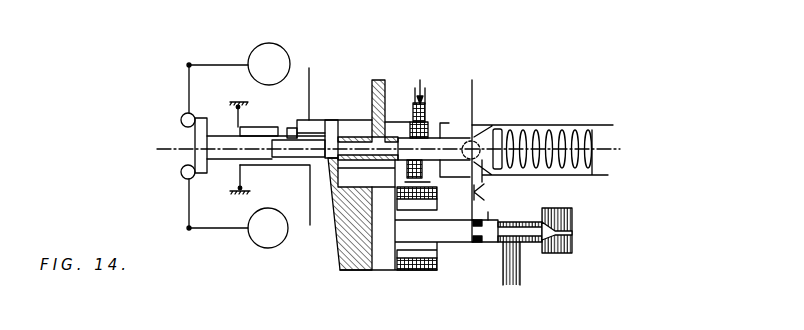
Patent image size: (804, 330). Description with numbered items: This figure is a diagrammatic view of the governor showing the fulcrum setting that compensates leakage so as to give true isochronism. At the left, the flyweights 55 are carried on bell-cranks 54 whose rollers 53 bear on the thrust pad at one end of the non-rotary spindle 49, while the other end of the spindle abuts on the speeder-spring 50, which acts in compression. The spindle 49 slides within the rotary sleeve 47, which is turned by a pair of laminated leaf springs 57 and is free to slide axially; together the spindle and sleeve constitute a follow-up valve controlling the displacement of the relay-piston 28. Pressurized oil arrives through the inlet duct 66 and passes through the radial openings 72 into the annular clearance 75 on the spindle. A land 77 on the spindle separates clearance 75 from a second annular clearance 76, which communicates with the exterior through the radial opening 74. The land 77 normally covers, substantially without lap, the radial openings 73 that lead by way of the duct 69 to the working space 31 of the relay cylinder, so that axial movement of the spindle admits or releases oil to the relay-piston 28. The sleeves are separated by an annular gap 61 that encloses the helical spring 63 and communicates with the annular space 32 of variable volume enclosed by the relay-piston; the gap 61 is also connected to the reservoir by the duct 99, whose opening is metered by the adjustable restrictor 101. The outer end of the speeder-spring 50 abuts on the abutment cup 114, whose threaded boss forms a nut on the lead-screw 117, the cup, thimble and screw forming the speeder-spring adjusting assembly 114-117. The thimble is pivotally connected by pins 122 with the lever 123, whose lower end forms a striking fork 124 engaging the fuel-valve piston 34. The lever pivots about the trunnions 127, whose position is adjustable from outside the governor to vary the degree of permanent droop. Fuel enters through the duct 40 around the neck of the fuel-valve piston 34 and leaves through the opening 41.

The bell-cranks 54 is at (207, 64).
The flyweights 55 is at (260, 62).
The rollers 53 is at (182, 115).
The non-rotary spindle 49 is at (217, 160).
The laminated leaf springs 57 is at (236, 106).
The radial opening 74 is at (283, 127).
The annular clearance 76 is at (293, 127).
The radial openings 73 is at (326, 167).
The rotary sleeve 47 is at (332, 125).
The land 77 is at (332, 136).
The duct 69 is at (331, 188).
The working space 31 is at (329, 234).
The annular clearance 75 is at (355, 137).
The inlet duct 66 is at (379, 40).
The radial openings 72 is at (387, 123).
The duct 99 is at (428, 112).
The adjustable restrictor 101 is at (420, 86).
The annular gap 61 is at (433, 128).
The helical spring 63 is at (426, 182).
The relay-piston 28 is at (383, 266).
The annular space 32 is at (420, 272).
The lever 123 is at (473, 97).
The pins 122 is at (480, 146).
The speeder-spring 50 is at (548, 130).
The speeder-spring adjusting assembly 114-117 is at (573, 134).
The abutment cup 114 is at (573, 134).
The lead-screw 117 is at (571, 124).
The trunnions 127 is at (478, 190).
The striking fork 124 is at (478, 243).
The fuel-valve piston 34 is at (549, 236).
The duct 40 is at (510, 320).
The opening 41 is at (620, 233).